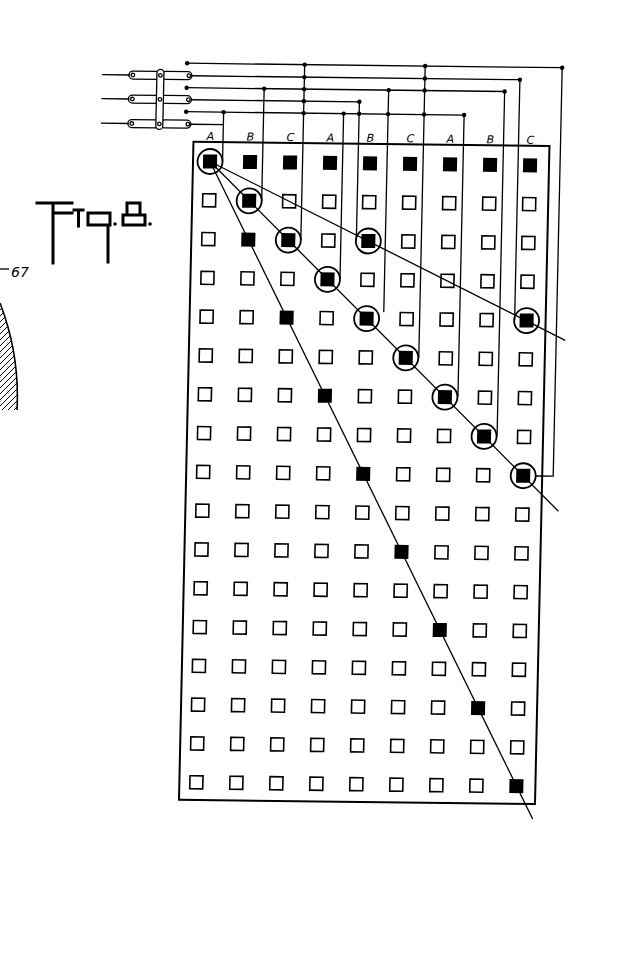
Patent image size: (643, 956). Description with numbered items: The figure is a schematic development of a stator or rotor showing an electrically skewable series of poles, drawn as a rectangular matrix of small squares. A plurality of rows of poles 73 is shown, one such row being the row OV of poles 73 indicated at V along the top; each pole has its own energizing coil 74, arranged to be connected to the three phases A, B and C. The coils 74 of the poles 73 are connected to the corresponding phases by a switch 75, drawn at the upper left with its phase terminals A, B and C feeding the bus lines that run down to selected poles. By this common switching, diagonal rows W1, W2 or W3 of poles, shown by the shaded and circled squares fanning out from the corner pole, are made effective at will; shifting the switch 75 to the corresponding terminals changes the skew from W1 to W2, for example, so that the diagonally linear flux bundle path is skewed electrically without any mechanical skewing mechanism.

The poles 73 is at (200, 155).
The coils 74 is at (203, 165).
The switch 75 is at (158, 72).
The row OV of poles V is at (543, 163).
The diagonal row 0W1 W1 is at (542, 319).
The diagonal row 0W2 W2 is at (540, 478).
The diagonal row 0W3 W3 is at (523, 786).